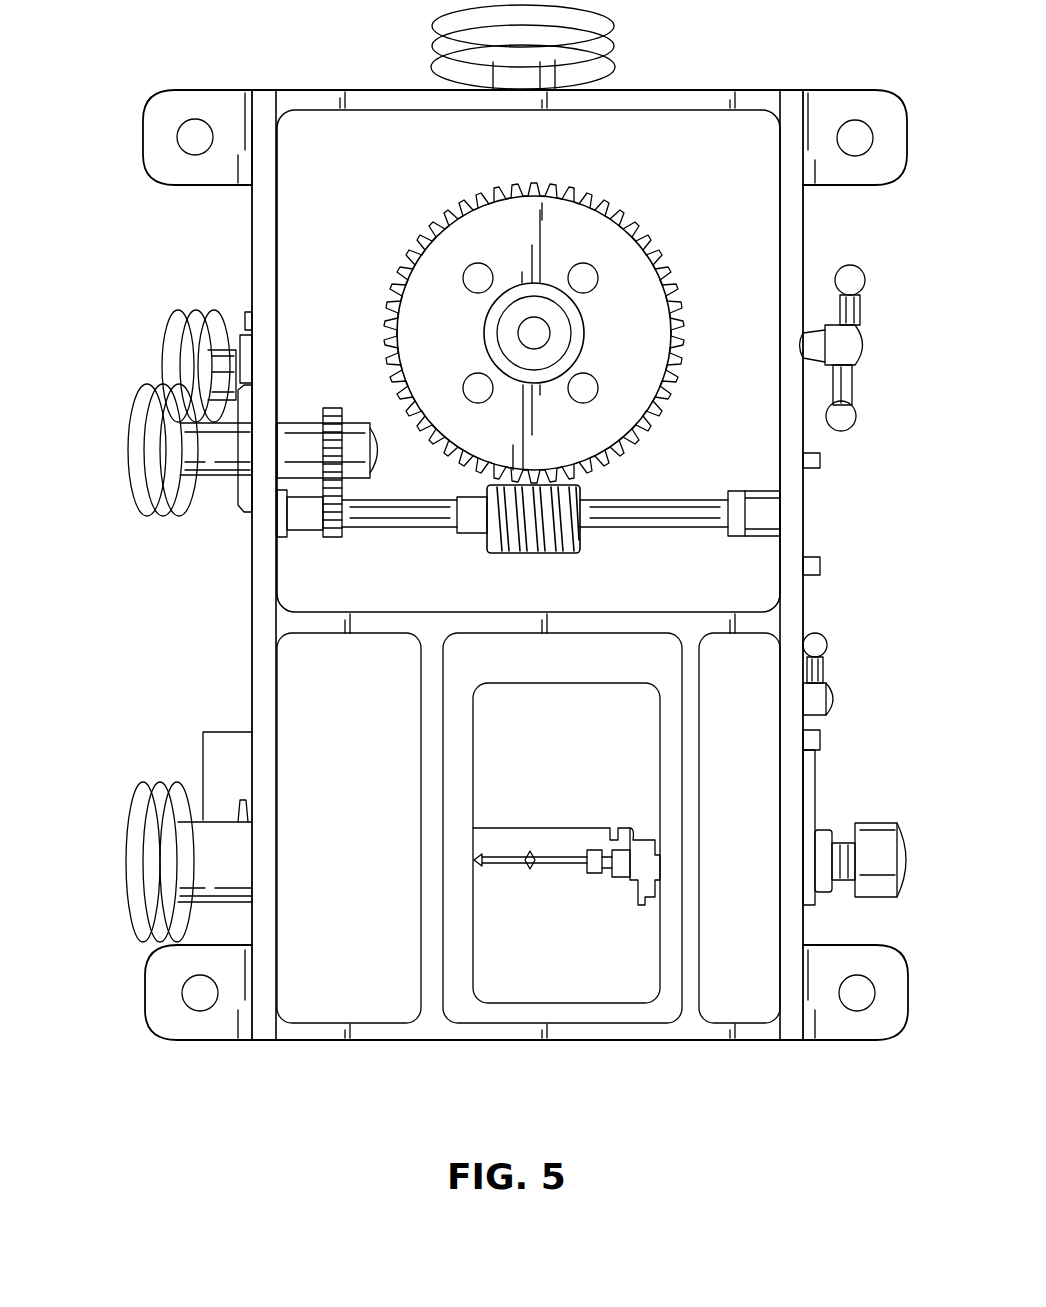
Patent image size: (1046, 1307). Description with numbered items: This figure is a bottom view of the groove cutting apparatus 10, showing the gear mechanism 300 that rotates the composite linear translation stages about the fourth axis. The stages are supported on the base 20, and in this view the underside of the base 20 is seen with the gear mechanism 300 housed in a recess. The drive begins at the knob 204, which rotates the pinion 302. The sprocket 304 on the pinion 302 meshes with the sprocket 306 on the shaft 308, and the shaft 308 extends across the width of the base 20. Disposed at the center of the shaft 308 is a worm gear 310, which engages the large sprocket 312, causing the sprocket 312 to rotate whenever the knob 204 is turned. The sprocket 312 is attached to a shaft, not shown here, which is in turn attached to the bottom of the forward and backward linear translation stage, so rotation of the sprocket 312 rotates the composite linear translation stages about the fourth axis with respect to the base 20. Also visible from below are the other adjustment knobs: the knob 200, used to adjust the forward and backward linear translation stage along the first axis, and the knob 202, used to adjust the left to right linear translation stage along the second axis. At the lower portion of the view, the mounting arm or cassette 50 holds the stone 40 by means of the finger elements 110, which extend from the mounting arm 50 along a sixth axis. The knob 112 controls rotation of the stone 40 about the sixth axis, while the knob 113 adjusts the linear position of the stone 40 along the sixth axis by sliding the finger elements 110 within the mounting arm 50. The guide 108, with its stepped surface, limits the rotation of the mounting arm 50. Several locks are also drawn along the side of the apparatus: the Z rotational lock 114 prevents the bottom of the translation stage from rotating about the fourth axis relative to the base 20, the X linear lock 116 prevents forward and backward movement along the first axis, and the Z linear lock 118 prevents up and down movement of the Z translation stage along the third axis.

The groove cutting apparatus 10 is at (180, 1060).
The base 20 is at (252, 630).
The stone 40 is at (527, 872).
The mounting arm or cassette 50 is at (630, 752).
The guide 108 is at (208, 757).
The finger elements 110 is at (568, 873).
The knob 112 is at (127, 890).
The knob 113 is at (898, 826).
The Z rotational lock 114 is at (870, 330).
The X linear lock 116 is at (853, 392).
The Z linear lock 118 is at (835, 690).
The knob 200 is at (614, 50).
The knob 202 is at (165, 340).
The knob 204 is at (120, 443).
The gear mechanism 300 is at (296, 283).
The pinion 302 is at (300, 423).
The sprocket 304 is at (342, 414).
The sprocket 306 is at (343, 536).
The shaft 308 is at (397, 500).
The worm gear 310 is at (535, 552).
The sprocket 312 is at (672, 388).